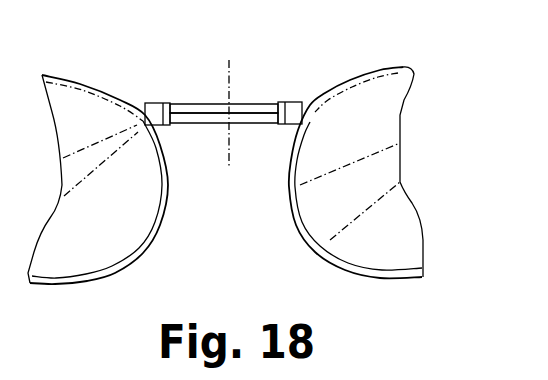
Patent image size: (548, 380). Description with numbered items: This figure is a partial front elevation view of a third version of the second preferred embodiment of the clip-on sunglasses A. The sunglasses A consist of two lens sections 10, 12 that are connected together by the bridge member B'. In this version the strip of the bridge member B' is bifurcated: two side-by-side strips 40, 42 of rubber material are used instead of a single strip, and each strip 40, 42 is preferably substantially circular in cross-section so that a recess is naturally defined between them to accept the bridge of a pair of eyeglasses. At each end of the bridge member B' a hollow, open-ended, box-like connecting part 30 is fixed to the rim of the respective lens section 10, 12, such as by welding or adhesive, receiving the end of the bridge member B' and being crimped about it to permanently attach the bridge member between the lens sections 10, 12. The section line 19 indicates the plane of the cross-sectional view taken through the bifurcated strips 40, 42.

The lens section 10 is at (122, 215).
The lens section 12 is at (371, 197).
The connecting part 30 is at (155, 110).
The strip 40 is at (186, 108).
The strip 42 is at (247, 118).
The section line 19- 19 is at (224, 156).
The bridge member B' is at (229, 110).
The clip-on sunglasses A is at (382, 48).